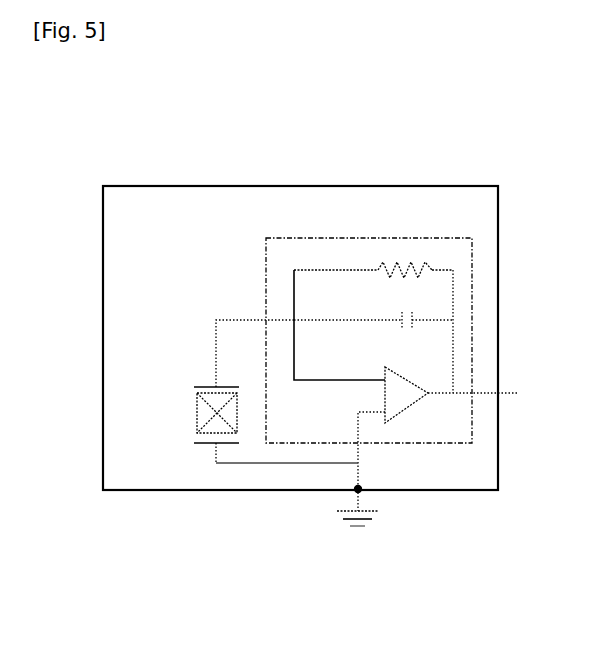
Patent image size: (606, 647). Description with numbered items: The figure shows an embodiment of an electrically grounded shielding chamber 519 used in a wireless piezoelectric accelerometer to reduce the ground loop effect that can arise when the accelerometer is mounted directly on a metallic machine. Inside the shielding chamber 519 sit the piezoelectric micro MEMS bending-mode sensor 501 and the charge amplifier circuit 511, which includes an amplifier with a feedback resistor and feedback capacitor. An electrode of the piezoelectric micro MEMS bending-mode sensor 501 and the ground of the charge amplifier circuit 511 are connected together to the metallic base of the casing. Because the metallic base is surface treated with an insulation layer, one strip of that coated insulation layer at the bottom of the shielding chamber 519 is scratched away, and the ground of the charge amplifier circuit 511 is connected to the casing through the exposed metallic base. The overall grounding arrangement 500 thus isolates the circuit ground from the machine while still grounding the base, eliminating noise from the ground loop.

The sensor device 500 is at (324, 618).
The shielding chamber 519 is at (155, 180).
The charge amplifier circuit 511 is at (262, 248).
The piezoelectric micro MEMS bending-mode sensor 501 is at (183, 377).